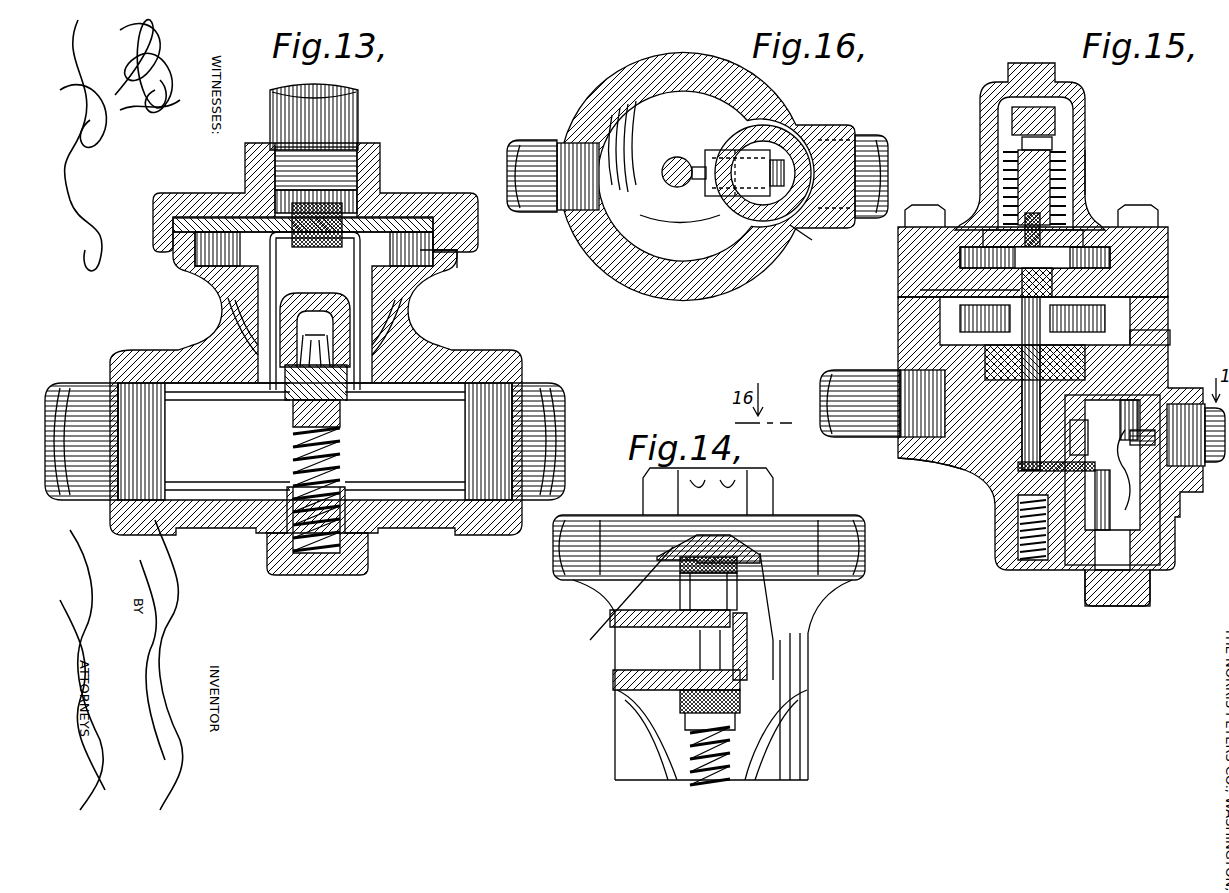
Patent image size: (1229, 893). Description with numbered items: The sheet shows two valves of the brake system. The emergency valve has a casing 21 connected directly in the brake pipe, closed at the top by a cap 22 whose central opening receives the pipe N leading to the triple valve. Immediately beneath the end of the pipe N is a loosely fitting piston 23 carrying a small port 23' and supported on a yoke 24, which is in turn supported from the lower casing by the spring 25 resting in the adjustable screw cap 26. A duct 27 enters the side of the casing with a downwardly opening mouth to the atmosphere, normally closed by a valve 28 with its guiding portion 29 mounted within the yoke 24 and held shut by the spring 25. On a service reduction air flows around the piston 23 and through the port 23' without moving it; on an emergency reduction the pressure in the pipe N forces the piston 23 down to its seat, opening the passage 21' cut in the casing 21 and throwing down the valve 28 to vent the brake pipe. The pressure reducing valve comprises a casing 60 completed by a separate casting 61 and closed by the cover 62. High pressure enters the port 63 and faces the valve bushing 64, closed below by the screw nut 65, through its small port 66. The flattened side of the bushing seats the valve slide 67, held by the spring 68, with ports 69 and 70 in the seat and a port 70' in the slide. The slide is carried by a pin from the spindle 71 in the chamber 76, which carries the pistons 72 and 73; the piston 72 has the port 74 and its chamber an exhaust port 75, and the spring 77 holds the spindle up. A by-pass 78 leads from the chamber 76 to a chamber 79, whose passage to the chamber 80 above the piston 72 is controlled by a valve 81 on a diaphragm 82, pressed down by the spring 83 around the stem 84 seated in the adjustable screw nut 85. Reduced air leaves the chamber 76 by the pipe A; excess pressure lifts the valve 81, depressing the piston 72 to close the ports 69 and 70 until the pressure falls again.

In FIG. 13, the pipe N is at (360, 118).
In FIG. 13, the casing 21 is at (316, 383).
In FIG. 14, the casing 21 is at (709, 624).
In FIG. 13, the passage 21' is at (464, 265).
In FIG. 13, the cap 22 is at (407, 203).
In FIG. 13, the piston 23 is at (266, 212).
In FIG. 13, the port 23' is at (303, 244).
In FIG. 13, the yoke 24 is at (360, 262).
In FIG. 14, the yoke 24 is at (708, 583).
In FIG. 13, the spring 25 is at (338, 458).
In FIG. 14, the spring 25 is at (730, 750).
In FIG. 13, the adjustable screw cap 26 is at (368, 573).
In FIG. 13, the duct 27 is at (310, 308).
In FIG. 14, the duct 27 is at (610, 618).
In FIG. 13, the valve 28 is at (360, 397).
In FIG. 14, the valve 28 is at (740, 695).
In FIG. 13, the guiding portion 29 is at (278, 392).
In FIG. 14, the guiding portion 29 is at (745, 668).
In FIG. 16, the casing 60 is at (777, 110).
In FIG. 15, the casing 60 is at (1168, 310).
In FIG. 15, the casting 61 is at (1168, 262).
In FIG. 15, the cover 62 is at (1090, 190).
In FIG. 16, the port 63 is at (873, 143).
In FIG. 15, the port 63 is at (1180, 405).
In FIG. 16, the valve bushing 64 is at (793, 137).
In FIG. 15, the valve bushing 64 is at (1080, 570).
In FIG. 15, the screw nut 65 is at (1145, 605).
In FIG. 15, the port 66 is at (1142, 434).
In FIG. 16, the valve slide 67 is at (777, 183).
In FIG. 15, the valve slide 67 is at (1116, 500).
In FIG. 16, the spring 68 is at (790, 227).
In FIG. 15, the spring 68 is at (1129, 470).
In FIG. 15, the port 69 is at (1060, 482).
In FIG. 16, the port 70 is at (728, 195).
In FIG. 15, the port 70 is at (1040, 437).
In FIG. 15, the port 70' is at (1133, 418).
In FIG. 16, the spindle 71 is at (680, 158).
In FIG. 15, the spindle 71 is at (1022, 396).
In FIG. 15, the piston 72 is at (1077, 318).
In FIG. 15, the piston 73 is at (1035, 362).
In FIG. 15, the port 74 is at (986, 318).
In FIG. 15, the exhaust port 75 is at (1170, 356).
In FIG. 16, the chamber 76 is at (680, 208).
In FIG. 15, the chamber 76 is at (937, 441).
In FIG. 15, the spring 77 is at (1018, 528).
In FIG. 15, the by-pass 78 is at (935, 292).
In FIG. 15, the chamber 79 is at (1035, 258).
In FIG. 15, the chamber 80 is at (1052, 282).
In FIG. 15, the valve 81 is at (1055, 210).
In FIG. 15, the diaphragm 82 is at (1042, 240).
In FIG. 15, the spring 83 is at (1060, 148).
In FIG. 15, the stem 84 is at (1003, 170).
In FIG. 15, the adjustable screw nut 85 is at (1085, 118).
In FIG. 15, the pipe A is at (832, 376).